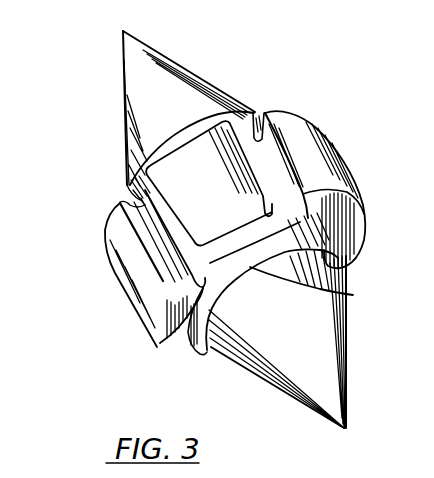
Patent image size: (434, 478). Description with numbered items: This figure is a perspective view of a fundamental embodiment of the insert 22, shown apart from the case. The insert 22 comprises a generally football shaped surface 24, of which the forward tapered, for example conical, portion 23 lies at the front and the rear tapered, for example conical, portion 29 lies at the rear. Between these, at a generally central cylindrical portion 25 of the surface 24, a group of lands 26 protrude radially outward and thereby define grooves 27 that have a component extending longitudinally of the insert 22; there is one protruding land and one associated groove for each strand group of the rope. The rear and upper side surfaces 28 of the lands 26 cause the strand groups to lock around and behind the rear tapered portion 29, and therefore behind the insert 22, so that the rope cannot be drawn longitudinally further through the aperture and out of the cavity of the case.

The insert 22 is at (219, 60).
The forward tapered portion 23 is at (278, 363).
The football shaped surface 24 is at (351, 295).
The central cylindrical portion 25 is at (158, 346).
The lands 26 is at (110, 252).
The grooves 27 is at (274, 193).
The rear and upper side surfaces 28 is at (257, 133).
The rear tapered portion 29 is at (147, 97).